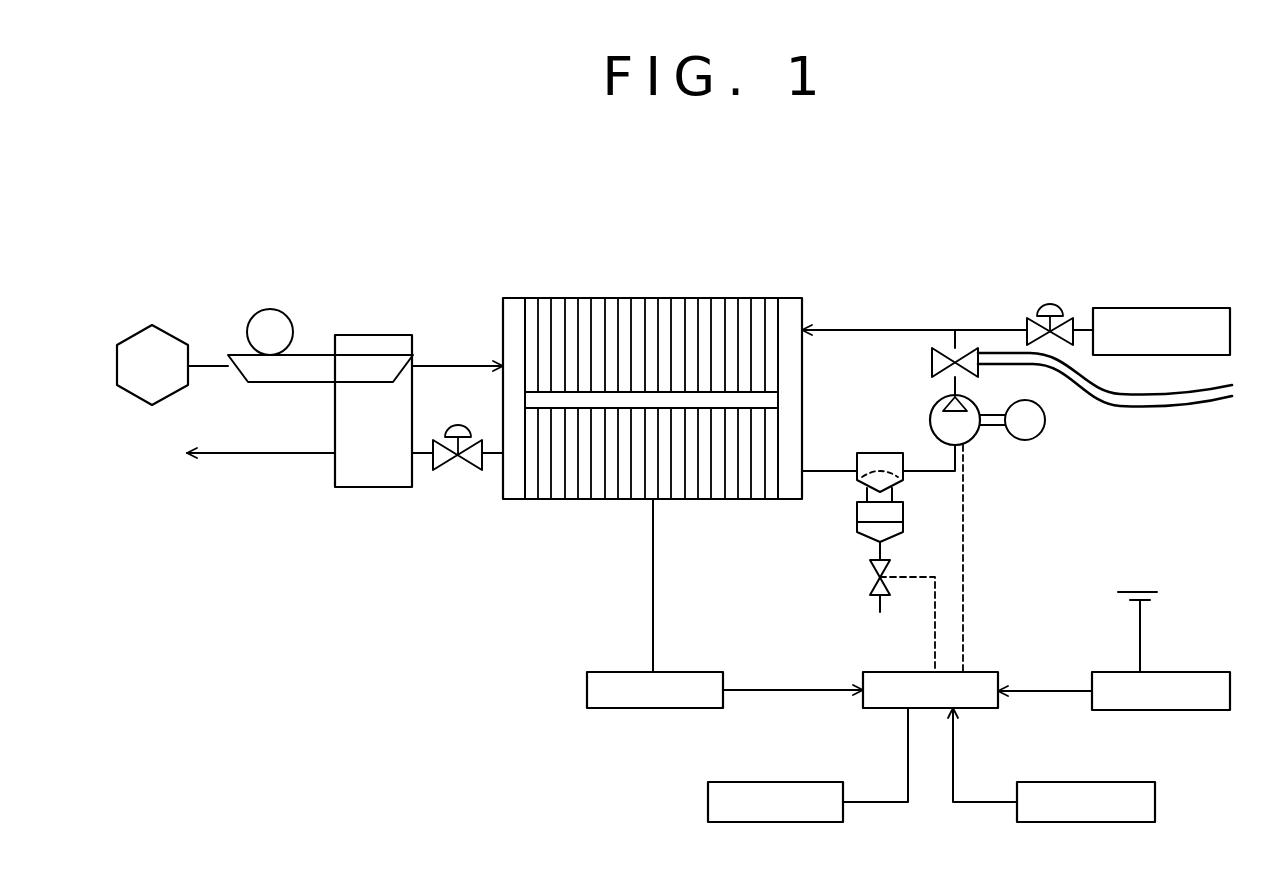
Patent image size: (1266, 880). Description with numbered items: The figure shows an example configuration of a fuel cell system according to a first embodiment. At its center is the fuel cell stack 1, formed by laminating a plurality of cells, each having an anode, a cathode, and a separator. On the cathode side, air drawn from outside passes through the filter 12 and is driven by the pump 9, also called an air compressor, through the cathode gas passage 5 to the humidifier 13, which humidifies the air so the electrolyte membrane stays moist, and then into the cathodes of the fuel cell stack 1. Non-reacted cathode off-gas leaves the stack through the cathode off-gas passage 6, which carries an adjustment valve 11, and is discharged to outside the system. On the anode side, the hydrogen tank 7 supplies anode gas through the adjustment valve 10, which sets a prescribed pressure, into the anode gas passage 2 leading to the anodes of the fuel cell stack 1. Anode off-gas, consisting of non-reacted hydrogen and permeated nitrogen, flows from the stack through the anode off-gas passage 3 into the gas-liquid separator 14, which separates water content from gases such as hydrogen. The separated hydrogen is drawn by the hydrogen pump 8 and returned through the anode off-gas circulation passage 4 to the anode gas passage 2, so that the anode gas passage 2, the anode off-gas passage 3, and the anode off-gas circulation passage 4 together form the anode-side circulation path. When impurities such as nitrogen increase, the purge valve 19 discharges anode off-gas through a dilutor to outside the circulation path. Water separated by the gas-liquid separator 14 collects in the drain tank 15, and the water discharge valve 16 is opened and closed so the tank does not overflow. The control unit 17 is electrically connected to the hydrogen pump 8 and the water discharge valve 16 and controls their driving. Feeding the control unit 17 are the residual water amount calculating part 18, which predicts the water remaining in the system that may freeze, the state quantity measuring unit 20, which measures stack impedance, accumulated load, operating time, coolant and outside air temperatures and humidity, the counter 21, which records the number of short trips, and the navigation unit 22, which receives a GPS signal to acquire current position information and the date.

The fuel cell stack 1 is at (680, 298).
The anode gas passage 2 is at (860, 330).
The anode off-gas passage 3 is at (826, 468).
The anode off-gas circulation passage 4 is at (958, 386).
The cathode gas passage 5 is at (215, 366).
The cathode off-gas passage 6 is at (254, 455).
The hydrogen tank 7 is at (1155, 308).
The hydrogen pump 8 is at (943, 396).
The pump 9 is at (300, 355).
The adjustment valve 10 is at (1065, 320).
The adjustment valve 11 is at (470, 470).
The filter 12 is at (172, 336).
The humidifier 13 is at (377, 335).
The gas-liquid separator 14 is at (905, 482).
The drain tank 15 is at (857, 529).
The water discharge valve 16 is at (870, 572).
The control unit 17 is at (977, 672).
The residual water amount calculating part 18 is at (1155, 800).
The purge valve 19 is at (928, 363).
The state quantity measuring unit 20 is at (682, 672).
The counter 21 is at (708, 800).
The navigation unit 22 is at (1173, 672).